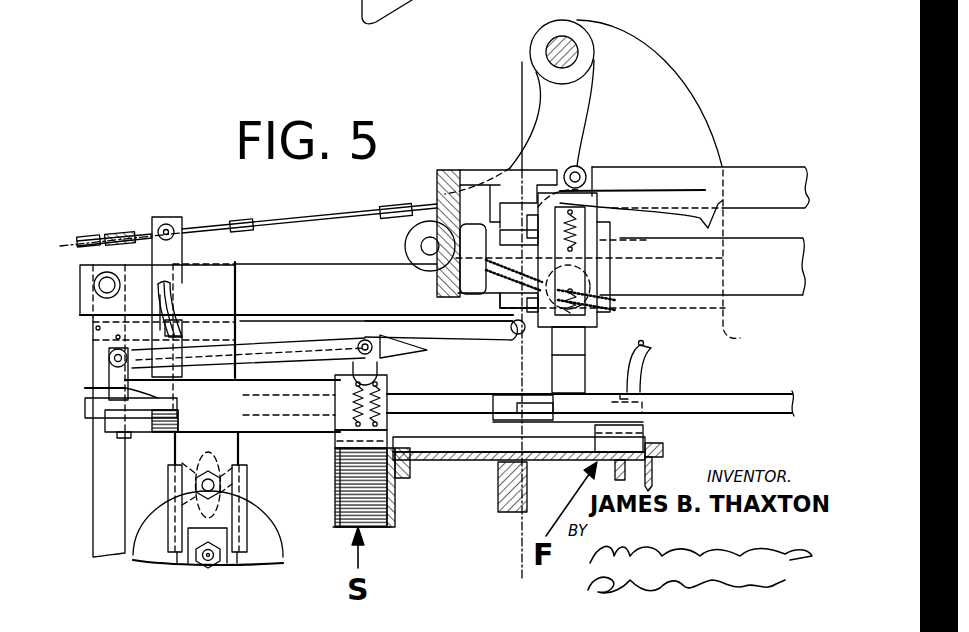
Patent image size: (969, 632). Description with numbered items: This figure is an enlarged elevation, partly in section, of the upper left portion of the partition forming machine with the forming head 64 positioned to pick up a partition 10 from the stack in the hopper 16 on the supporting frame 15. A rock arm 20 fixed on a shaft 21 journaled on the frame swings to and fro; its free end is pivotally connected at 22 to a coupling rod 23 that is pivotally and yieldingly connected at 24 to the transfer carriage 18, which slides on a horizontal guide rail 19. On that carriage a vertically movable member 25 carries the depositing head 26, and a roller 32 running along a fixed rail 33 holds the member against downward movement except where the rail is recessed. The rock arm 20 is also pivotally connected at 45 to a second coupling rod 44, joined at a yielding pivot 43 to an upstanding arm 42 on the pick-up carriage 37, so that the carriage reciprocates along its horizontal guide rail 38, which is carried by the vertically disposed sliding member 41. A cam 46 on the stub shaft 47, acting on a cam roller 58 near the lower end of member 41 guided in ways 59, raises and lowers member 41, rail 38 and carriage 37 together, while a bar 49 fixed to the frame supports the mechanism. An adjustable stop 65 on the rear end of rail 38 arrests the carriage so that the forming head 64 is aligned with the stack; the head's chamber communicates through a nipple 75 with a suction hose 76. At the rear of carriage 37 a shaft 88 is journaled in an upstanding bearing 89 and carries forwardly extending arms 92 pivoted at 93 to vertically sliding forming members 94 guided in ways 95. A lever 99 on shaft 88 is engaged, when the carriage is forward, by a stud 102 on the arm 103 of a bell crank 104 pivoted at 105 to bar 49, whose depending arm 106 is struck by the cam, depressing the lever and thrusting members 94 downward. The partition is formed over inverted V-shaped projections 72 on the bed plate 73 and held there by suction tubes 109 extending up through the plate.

The box partition 10 is at (345, 473).
The supporting frame 15 is at (522, 129).
The hopper 16 is at (334, 494).
The carriage 18 is at (582, 212).
The horizontal guide rail 19 is at (734, 244).
The arm 20 is at (540, 101).
The shaft 21 is at (564, 44).
The pivotal connection 22 is at (416, 246).
The coupling rod 23 is at (537, 267).
The pivotal and yielding connection 24 is at (592, 258).
The member 25 is at (574, 352).
The depositing head 26 is at (632, 440).
The roller 32 is at (579, 167).
The fixed rail 33 is at (735, 170).
The carriage 37 is at (274, 418).
The horizontal guide rail 38 is at (447, 402).
The vertically disposed sliding member 41 is at (234, 301).
The upstanding arm 42 is at (169, 279).
The pivotal and yielding connection 43 is at (166, 224).
The coupling rod 44 is at (282, 222).
The pivotal connection 45 is at (436, 182).
The cam 46 is at (274, 548).
The stub shaft 47 is at (212, 566).
The bar 49 is at (320, 267).
The cam roller 58 is at (198, 470).
The ways 59 is at (169, 489).
The forming head 64 is at (377, 446).
The adjustable stop 65 is at (88, 389).
The inverted V-shaped projections 72 is at (467, 447).
The bed plate 73 is at (540, 458).
The nipple 75 is at (184, 340).
The suction hose 76 is at (160, 307).
The shaft 88 is at (109, 357).
The bearing 89 is at (109, 378).
The arms 92 is at (326, 345).
The pivotal connection 93 is at (365, 340).
The forming members 94 is at (380, 362).
The ways 95 is at (380, 383).
The lever 99 is at (389, 338).
The stud 102 is at (515, 336).
The arm 103 is at (282, 299).
The bell crank 104 is at (89, 337).
The pivot 105 is at (98, 278).
The depending arm 106 is at (125, 558).
The tubes 109 is at (615, 469).